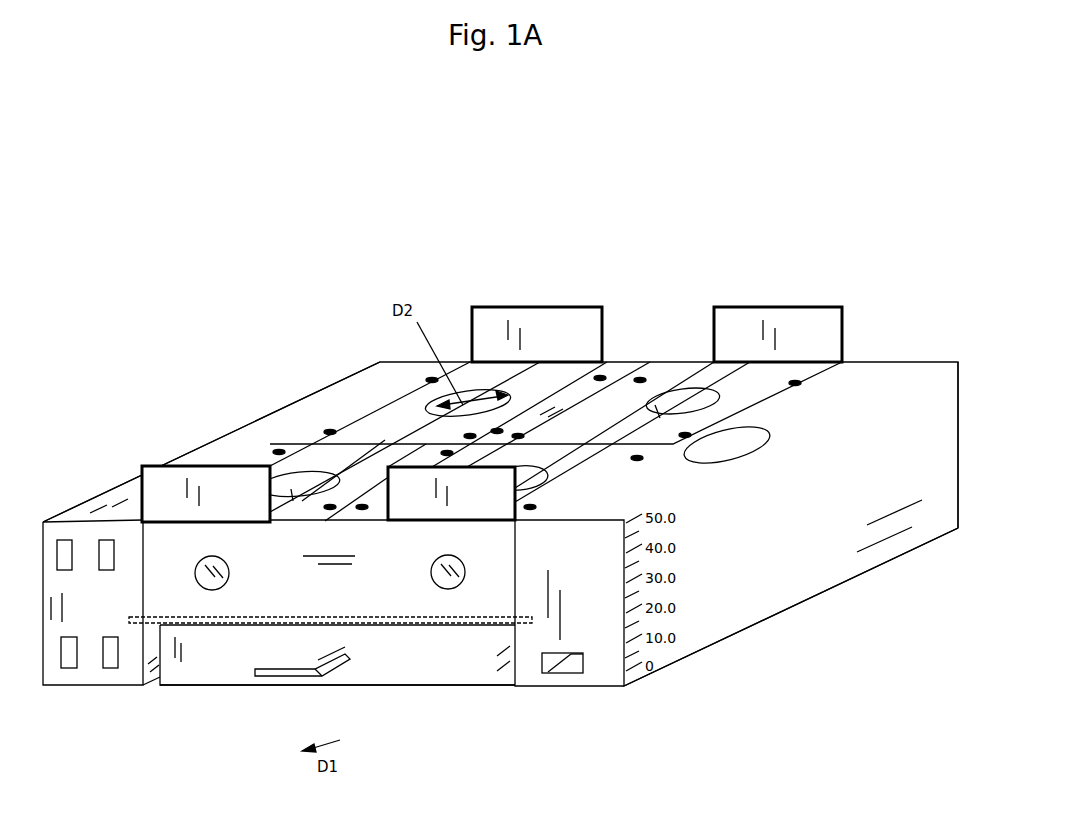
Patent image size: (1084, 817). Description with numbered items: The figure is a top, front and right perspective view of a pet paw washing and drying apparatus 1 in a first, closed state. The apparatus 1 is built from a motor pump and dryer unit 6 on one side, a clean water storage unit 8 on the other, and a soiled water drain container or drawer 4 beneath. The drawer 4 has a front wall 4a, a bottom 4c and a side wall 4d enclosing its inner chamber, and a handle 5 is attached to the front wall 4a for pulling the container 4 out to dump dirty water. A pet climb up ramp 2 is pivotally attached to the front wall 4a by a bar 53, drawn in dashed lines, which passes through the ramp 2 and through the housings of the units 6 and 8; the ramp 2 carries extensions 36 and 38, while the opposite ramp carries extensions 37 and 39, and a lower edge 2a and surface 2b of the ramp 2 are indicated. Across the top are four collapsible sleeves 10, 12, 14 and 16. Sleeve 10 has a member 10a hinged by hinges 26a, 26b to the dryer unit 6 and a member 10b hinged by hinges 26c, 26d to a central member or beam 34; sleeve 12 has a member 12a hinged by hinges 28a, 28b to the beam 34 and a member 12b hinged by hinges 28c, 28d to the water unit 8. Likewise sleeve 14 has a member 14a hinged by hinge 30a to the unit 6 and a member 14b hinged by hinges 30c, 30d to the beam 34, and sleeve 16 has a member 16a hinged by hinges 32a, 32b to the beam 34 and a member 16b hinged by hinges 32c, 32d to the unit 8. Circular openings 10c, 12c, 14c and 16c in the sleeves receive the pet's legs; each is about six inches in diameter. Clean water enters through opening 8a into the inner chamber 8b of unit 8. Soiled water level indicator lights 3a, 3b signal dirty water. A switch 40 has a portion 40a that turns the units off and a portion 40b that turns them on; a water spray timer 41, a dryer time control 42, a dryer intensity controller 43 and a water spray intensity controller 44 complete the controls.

The apparatus 1 is at (680, 282).
The pet climb up ramp 2 is at (390, 588).
The lower housing edge 2a is at (355, 626).
The top surface 2b is at (740, 412).
The soiled water level indicator light 3a is at (200, 565).
The soiled water level indicator light 3b is at (458, 561).
The soiled water drain container or drawer 4 is at (415, 664).
The front wall 4a is at (209, 652).
The bottom 4c is at (382, 690).
The side or wall 4d is at (505, 690).
The handle 5 is at (305, 677).
The motor pump and dryer unit 6 is at (232, 440).
The clean water storage unit 8 is at (728, 588).
The opening 8a is at (728, 445).
The inner chamber 8b is at (753, 433).
The collapsible sleeve 10 is at (425, 409).
The sleeve or member 10a is at (397, 428).
The sleeve or member 10b is at (440, 443).
The circular opening 10c is at (511, 396).
The collapsible sleeve 12 is at (683, 399).
The sleeve or member 12a is at (597, 430).
The sleeve or member 12b is at (758, 398).
The circular opening 12c is at (643, 423).
The collapsible sleeve 14 is at (335, 460).
The sleeve or member 14a is at (305, 470).
The sleeve or member 14b is at (380, 470).
The circular opening 14c is at (292, 504).
The collapsible sleeve 16 is at (622, 458).
The sleeve or member 16a is at (516, 462).
The sleeve or member 16b is at (571, 492).
The circular opening 16c is at (556, 468).
The hinge 26a is at (428, 381).
The hinge 26b is at (331, 430).
The hinge 26c is at (598, 376).
The hinge 26d is at (492, 417).
The hinge 28a is at (642, 382).
The hinge 28b is at (522, 436).
The hinge 28c is at (799, 384).
The hinge 28d is at (684, 438).
The hinge 30a is at (284, 441).
The hinge 30c is at (441, 453).
The hinge 30d is at (333, 505).
The hinge 32a is at (469, 434).
The hinge 32b is at (365, 510).
The hinge 32c is at (637, 461).
The hinge 32d is at (536, 507).
The member or beam 34 is at (335, 520).
The extension 36 is at (235, 508).
The extension 37 is at (535, 315).
The extension 38 is at (483, 508).
The extension 39 is at (805, 328).
The switch 40 is at (563, 674).
The portion 40a is at (577, 670).
The portion 40b is at (547, 666).
The water spray timer 41 is at (110, 640).
The dryer timer control 42 is at (70, 640).
The dryer intensity controller 43 is at (67, 553).
The water spray intensity controller 44 is at (110, 553).
The bar 53 is at (180, 618).